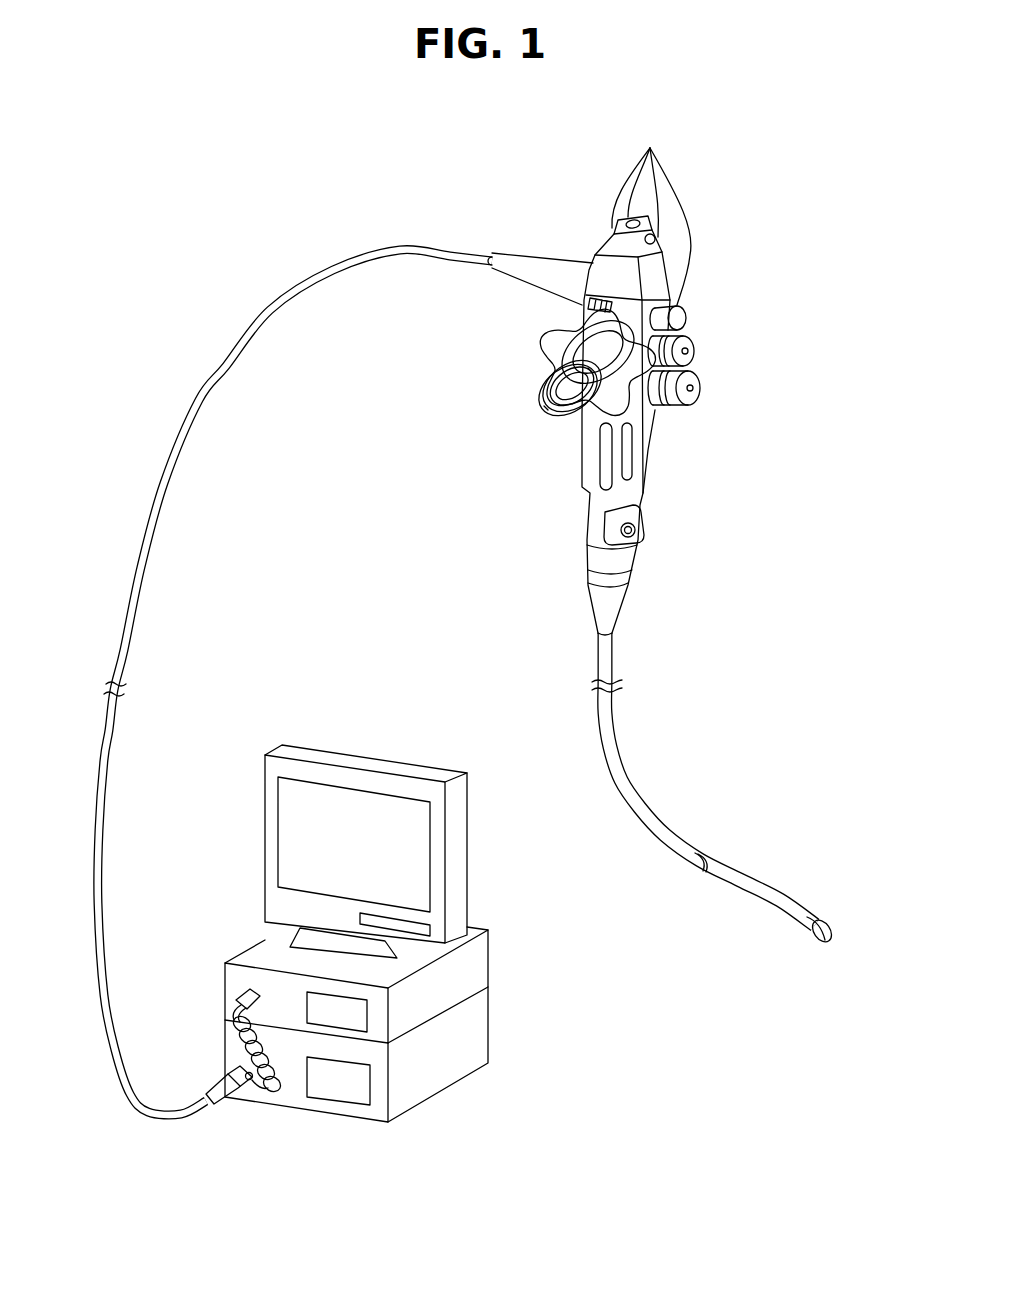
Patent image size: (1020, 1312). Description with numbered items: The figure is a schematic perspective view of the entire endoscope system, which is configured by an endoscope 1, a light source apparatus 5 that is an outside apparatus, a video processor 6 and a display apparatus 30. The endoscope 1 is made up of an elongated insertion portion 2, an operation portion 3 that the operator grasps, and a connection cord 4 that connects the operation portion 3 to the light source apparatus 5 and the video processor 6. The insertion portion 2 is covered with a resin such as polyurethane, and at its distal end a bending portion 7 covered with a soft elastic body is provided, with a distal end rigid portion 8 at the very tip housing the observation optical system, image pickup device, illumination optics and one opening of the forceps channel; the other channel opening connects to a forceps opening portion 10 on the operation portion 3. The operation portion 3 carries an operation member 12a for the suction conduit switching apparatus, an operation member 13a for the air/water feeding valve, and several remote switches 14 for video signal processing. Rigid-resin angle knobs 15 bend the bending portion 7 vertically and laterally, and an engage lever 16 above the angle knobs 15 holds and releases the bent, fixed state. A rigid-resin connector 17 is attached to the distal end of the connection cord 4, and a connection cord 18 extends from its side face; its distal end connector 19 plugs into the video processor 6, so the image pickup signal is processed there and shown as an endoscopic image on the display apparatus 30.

The endoscope 1 is at (317, 197).
The insertion portion 2 is at (645, 778).
The operation portion 3 is at (773, 216).
The connection cord 4 is at (217, 372).
The light source apparatus 5 is at (485, 1027).
The video processor 6 is at (486, 960).
The bending portion 7 is at (753, 887).
The distal end rigid portion 8 is at (813, 917).
The forceps opening portion 10 is at (640, 527).
The operation member of suction conduit switching apparatus 12a is at (698, 347).
The operation member of air/water feeding valve 13a is at (700, 390).
The remote switches 14 is at (651, 212).
The angle knobs 15 is at (542, 362).
The engage lever 16 is at (557, 405).
The connector 17 is at (219, 1094).
The connection cord 18 is at (243, 1042).
The distal end connector 19 is at (238, 1002).
The display apparatus 30 is at (458, 873).